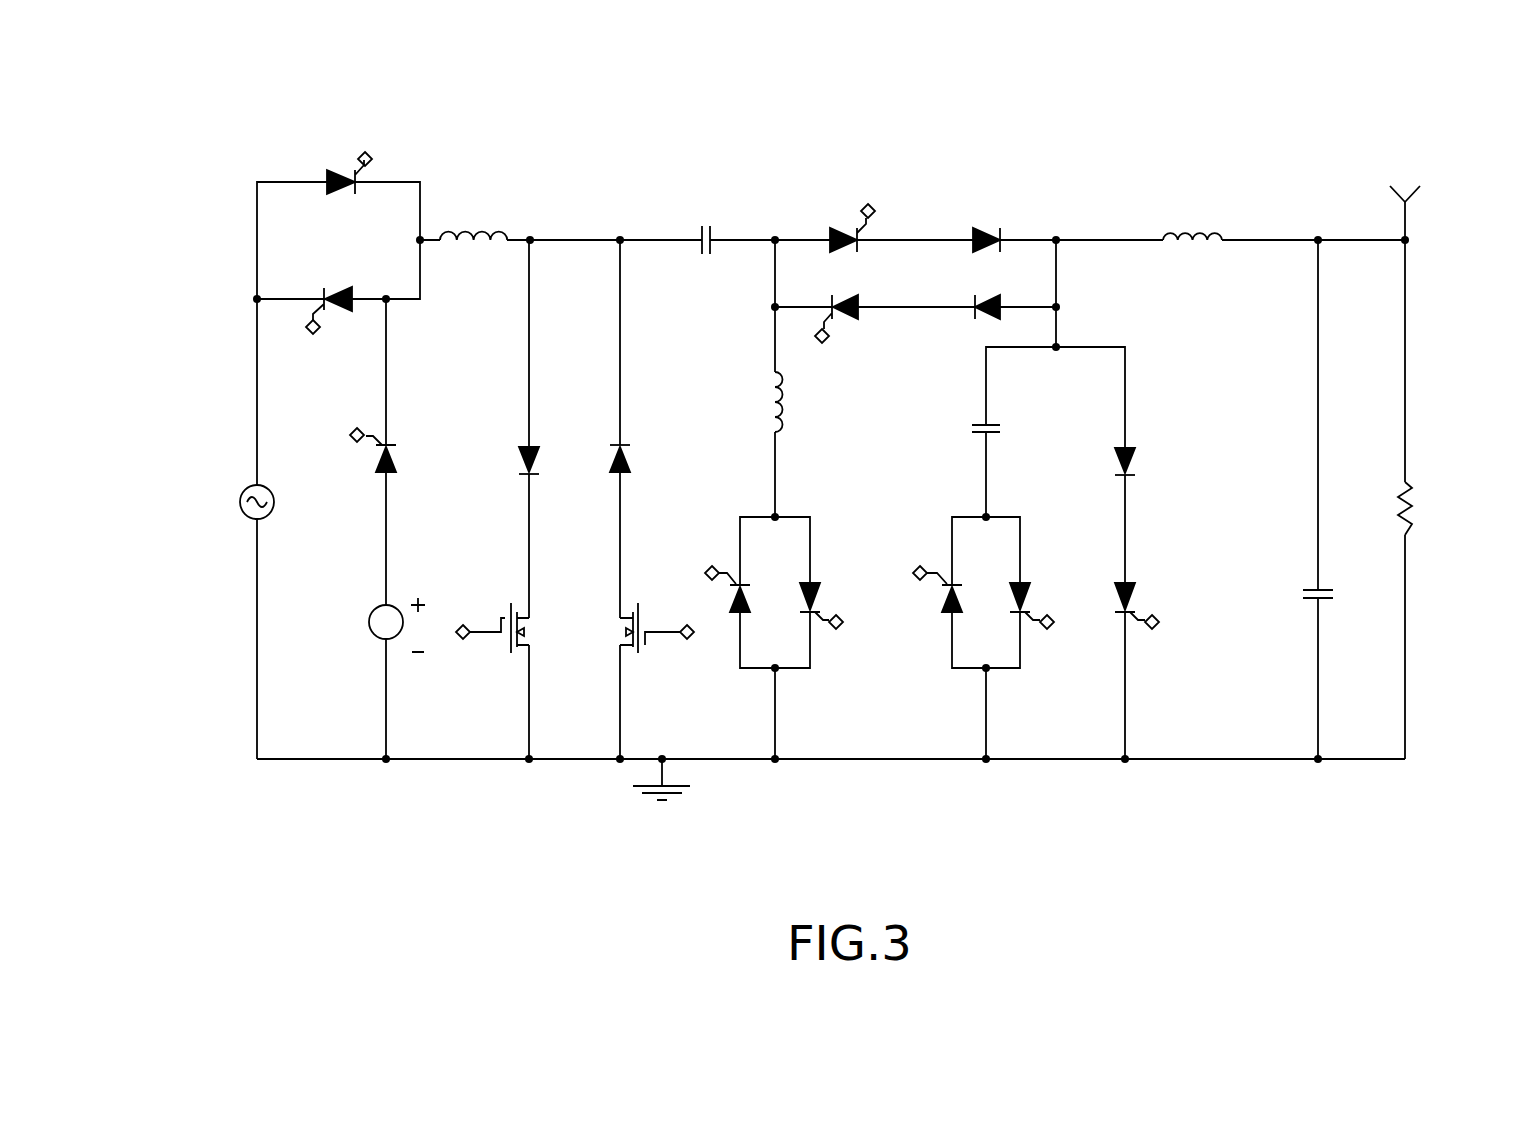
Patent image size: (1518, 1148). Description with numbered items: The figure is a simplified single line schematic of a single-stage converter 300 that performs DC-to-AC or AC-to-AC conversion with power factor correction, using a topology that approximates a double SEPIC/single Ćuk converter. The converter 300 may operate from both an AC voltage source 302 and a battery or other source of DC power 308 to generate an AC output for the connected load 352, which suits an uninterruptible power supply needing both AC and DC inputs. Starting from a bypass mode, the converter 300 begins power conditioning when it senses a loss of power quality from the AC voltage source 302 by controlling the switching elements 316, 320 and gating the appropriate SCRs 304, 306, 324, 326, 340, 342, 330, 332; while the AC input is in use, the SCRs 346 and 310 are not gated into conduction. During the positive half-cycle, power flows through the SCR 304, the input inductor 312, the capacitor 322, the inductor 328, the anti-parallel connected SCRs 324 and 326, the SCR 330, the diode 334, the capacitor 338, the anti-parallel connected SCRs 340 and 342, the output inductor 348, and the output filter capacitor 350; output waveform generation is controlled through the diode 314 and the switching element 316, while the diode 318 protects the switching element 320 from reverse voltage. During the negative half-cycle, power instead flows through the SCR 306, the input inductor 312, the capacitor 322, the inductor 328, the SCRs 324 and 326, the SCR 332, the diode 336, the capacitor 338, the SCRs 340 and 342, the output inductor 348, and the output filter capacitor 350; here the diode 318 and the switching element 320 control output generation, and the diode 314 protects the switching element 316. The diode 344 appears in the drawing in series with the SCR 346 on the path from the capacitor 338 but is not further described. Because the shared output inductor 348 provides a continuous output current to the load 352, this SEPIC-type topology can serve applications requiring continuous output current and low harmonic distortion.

The single-stage converter 300 is at (372, 828).
The AC voltage source 302 is at (238, 500).
The SCR 304 is at (336, 180).
The SCR 306 is at (310, 338).
The source of DC power 308 is at (372, 610).
The SCR 310 is at (390, 474).
The input inductor 312 is at (470, 226).
The diode 314 is at (529, 447).
The switching element 316 is at (503, 652).
The diode 318 is at (628, 460).
The switching element 320 is at (648, 655).
The capacitor 322 is at (706, 225).
The SCR 324 is at (737, 584).
The SCR 326 is at (812, 583).
The inductor 328 is at (780, 428).
The SCR 330 is at (842, 230).
The SCR 332 is at (852, 316).
The diode 334 is at (985, 230).
The diode 336 is at (992, 318).
The capacitor 338 is at (1000, 428).
The SCR 340 is at (953, 610).
The SCR 342 is at (1022, 583).
The diode 344 is at (1131, 453).
The SCR 346 is at (1128, 583).
The output inductor 348 is at (1176, 225).
The output filter capacitor 350 is at (1300, 595).
The load 352 is at (1408, 530).